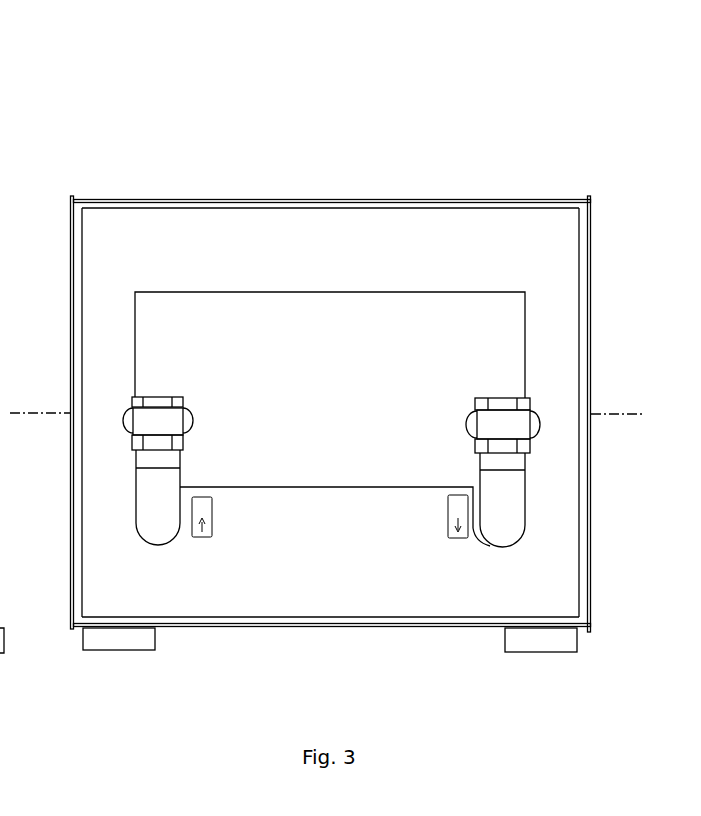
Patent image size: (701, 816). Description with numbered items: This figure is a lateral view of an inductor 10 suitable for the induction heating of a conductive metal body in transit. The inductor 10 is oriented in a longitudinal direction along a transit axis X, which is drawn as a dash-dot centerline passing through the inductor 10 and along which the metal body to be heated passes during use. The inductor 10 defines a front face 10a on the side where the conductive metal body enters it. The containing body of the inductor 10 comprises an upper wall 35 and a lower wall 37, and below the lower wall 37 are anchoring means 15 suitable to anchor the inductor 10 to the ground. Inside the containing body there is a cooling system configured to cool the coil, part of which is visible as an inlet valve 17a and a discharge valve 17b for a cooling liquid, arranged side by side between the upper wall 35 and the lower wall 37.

The inductor 10 is at (157, 127).
The front face 10a is at (71, 233).
The anchoring means 15 is at (143, 642).
The inlet valve 17a is at (155, 415).
The discharge valve 17b is at (503, 427).
The upper wall 35 is at (326, 201).
The lower wall 37 is at (330, 627).
The transit axis X is at (32, 414).